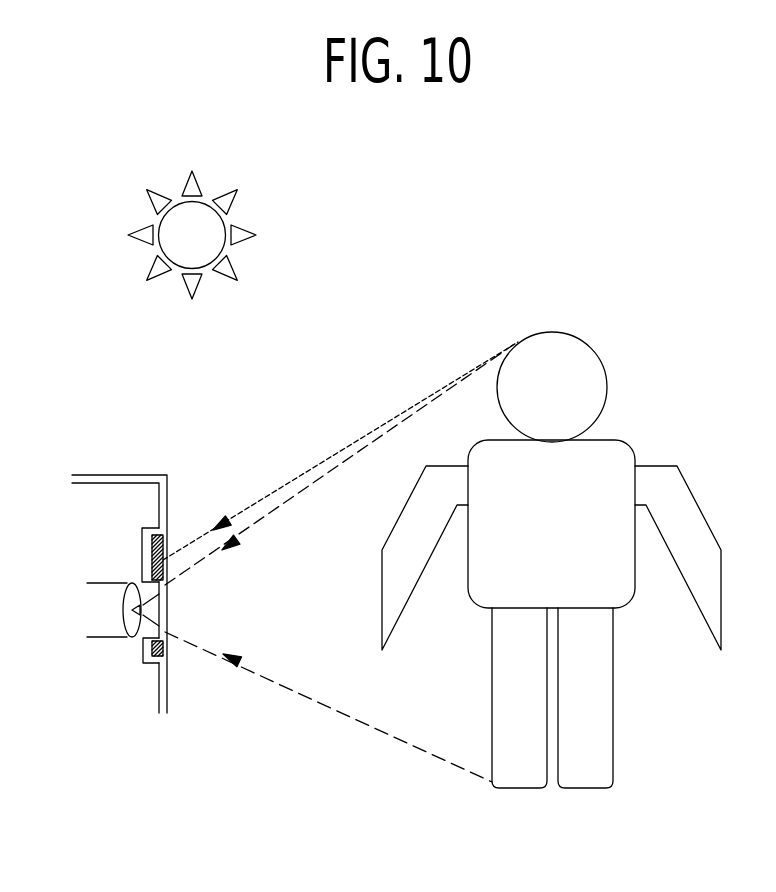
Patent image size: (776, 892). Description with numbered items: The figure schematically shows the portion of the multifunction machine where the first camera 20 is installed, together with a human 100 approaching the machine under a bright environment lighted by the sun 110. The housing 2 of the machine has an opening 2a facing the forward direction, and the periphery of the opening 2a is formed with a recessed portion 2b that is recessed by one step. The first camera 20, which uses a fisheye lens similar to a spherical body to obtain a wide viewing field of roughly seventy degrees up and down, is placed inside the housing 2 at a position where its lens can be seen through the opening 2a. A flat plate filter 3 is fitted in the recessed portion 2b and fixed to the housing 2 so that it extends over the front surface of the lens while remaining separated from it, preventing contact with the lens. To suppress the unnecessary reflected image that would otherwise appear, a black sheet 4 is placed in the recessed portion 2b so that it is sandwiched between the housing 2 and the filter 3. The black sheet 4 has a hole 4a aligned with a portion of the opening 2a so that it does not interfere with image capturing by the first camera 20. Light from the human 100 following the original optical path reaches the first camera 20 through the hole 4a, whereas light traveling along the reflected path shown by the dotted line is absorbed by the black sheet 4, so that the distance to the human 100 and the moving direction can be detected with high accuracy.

The housing 2 is at (128, 475).
The opening 2a is at (162, 597).
The recessed portion 2b is at (164, 550).
The filter 3 is at (95, 435).
The black sheet 4 is at (153, 529).
The hole 4a is at (164, 637).
The first camera 20 is at (103, 583).
The human 100 is at (617, 335).
The sun 110 is at (268, 168).